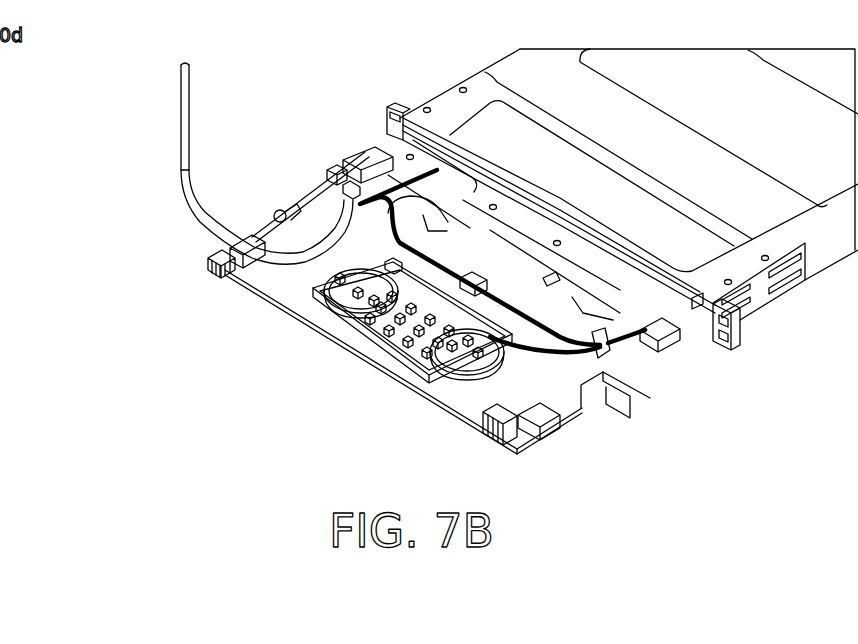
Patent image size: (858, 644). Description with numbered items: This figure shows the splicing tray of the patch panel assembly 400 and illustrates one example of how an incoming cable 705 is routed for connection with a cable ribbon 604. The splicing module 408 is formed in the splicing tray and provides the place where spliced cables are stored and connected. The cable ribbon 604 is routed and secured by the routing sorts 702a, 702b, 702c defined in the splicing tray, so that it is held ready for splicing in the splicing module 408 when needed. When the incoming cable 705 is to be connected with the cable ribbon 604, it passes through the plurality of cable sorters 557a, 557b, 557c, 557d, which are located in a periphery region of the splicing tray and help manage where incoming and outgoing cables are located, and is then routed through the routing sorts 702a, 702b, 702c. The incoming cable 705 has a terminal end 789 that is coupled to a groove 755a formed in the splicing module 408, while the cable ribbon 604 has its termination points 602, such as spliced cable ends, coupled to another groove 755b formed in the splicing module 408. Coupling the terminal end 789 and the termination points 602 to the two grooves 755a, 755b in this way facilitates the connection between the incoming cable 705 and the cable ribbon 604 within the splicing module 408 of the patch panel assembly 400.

The patch panel assembly 400 is at (765, 95).
The splicing module 408 is at (20, 0).
The routing sort 702a is at (337, 200).
The routing sort 702b is at (472, 272).
The routing sort 702c is at (632, 386).
The cable sorter 557a is at (358, 165).
The cable sorter 557b is at (210, 262).
The cable sorter 557c is at (550, 435).
The cable sorter 557d is at (682, 348).
The incoming cable 705 is at (187, 200).
The terminal end 789 is at (316, 280).
The groove 755a is at (380, 280).
The groove 755b is at (476, 335).
The termination points 602 is at (484, 410).
The cable ribbon 604 is at (527, 370).